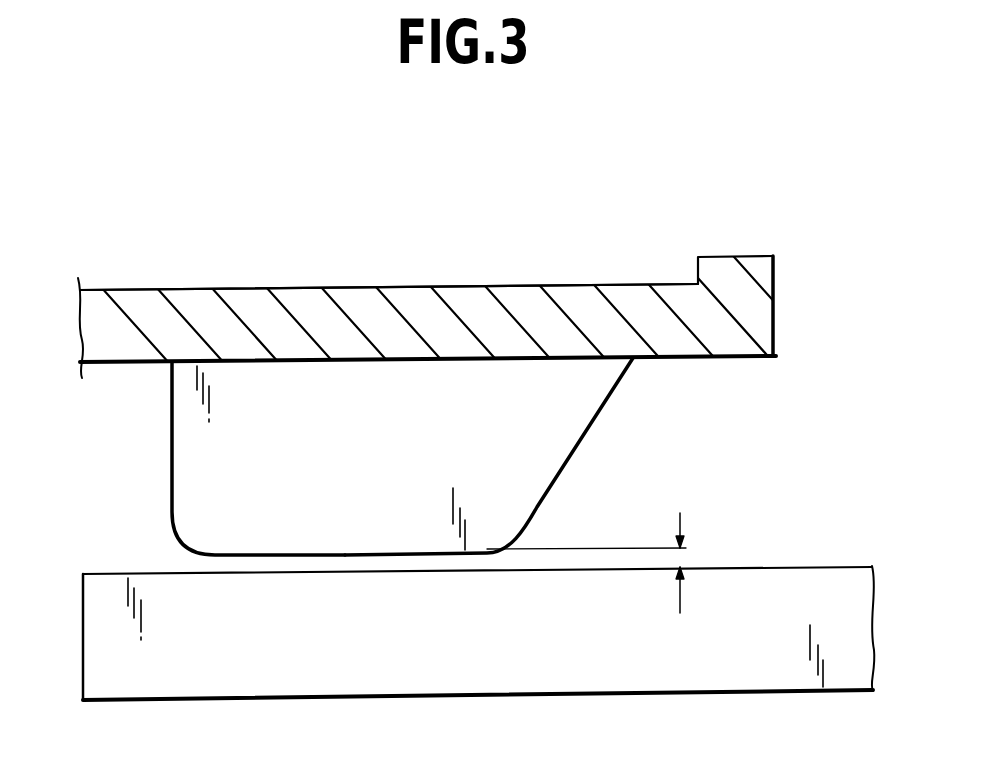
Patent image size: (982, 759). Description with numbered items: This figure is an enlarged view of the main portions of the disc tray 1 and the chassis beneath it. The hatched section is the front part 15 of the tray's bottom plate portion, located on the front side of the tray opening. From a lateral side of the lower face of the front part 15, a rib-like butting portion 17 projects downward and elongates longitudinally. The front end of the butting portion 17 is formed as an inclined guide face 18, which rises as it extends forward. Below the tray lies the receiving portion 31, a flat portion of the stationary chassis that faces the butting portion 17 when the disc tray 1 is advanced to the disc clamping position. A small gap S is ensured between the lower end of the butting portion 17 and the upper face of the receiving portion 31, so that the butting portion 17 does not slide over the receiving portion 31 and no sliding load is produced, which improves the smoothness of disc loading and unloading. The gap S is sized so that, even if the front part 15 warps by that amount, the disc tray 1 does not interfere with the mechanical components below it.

The disc tray 1 is at (773, 333).
The front part of bottom plate portion 15 is at (325, 288).
The butting portion 17 is at (181, 442).
The inclined guide face 18 is at (572, 460).
The receiving portion 31 is at (817, 578).
The gap S is at (683, 557).